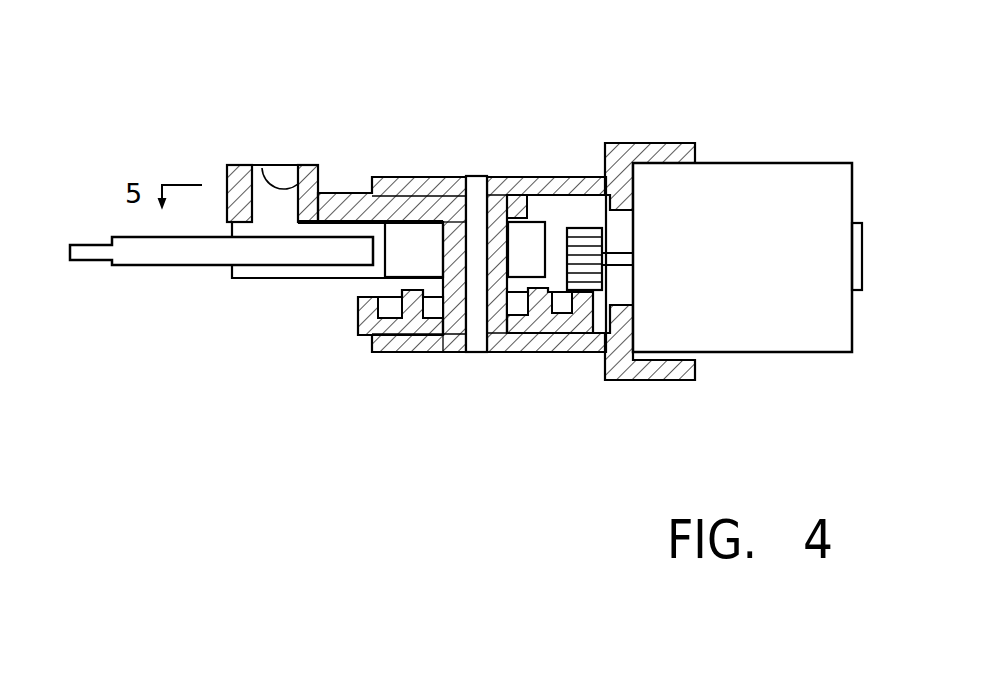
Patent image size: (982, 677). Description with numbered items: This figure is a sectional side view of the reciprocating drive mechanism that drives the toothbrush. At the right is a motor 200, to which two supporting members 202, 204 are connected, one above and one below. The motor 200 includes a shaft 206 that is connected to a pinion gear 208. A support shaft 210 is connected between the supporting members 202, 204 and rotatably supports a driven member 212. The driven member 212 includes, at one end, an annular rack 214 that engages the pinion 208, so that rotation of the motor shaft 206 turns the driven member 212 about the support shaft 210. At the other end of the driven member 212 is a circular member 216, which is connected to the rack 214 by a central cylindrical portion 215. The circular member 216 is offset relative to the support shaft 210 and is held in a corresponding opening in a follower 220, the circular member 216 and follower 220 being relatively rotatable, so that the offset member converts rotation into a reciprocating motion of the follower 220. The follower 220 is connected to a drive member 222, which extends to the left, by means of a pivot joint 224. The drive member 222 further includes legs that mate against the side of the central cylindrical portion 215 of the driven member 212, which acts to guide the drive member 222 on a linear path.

The motor 200 is at (753, 175).
The supporting member 202 is at (640, 142).
The supporting member 204 is at (647, 370).
The shaft 206 is at (625, 258).
The pinion gear 208 is at (585, 228).
The support shaft 210 is at (473, 192).
The driven member 212 is at (432, 243).
The annular rack 214 is at (357, 297).
The cylindrical portion 215 is at (527, 312).
The circular member 216 is at (448, 328).
The follower 220 is at (338, 202).
The drive member 222 is at (155, 253).
The pivot joint 224 is at (265, 166).